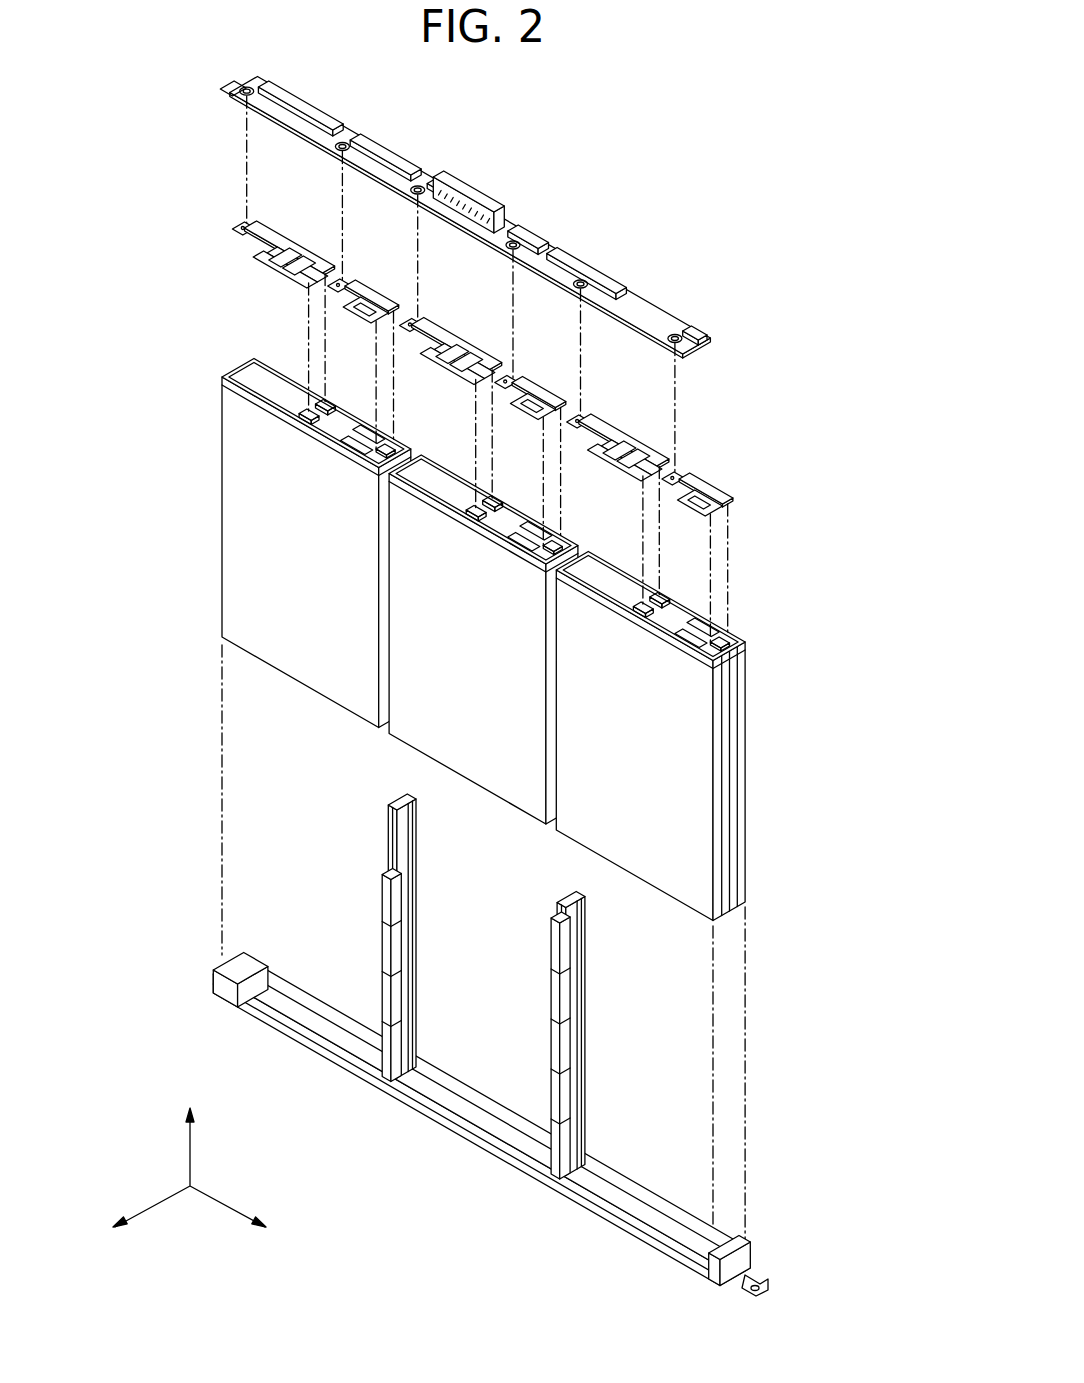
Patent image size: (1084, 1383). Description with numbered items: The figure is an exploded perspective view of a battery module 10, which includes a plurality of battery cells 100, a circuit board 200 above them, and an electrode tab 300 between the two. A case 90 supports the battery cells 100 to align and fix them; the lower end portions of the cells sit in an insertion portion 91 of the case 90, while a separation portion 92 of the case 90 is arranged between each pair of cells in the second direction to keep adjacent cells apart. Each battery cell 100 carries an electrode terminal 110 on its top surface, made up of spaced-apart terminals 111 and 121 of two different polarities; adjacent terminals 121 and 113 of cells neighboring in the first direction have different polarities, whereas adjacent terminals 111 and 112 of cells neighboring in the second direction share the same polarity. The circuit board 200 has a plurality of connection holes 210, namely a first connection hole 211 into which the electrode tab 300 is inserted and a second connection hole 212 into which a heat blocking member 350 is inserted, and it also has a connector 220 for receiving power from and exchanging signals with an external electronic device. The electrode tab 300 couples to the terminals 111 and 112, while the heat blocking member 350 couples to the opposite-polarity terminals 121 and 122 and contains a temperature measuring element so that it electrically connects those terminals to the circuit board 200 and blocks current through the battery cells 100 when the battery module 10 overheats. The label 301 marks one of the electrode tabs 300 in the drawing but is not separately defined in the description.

The battery module 10 is at (771, 116).
The case 90 is at (766, 1154).
The insertion portion 91 is at (480, 1140).
The separation portion 92 is at (560, 1008).
The battery cells 100 is at (786, 657).
The electrode terminal 110 is at (545, 550).
The terminal 111 is at (720, 630).
The terminal 112 is at (698, 647).
The terminal 113 is at (554, 539).
The terminal 121 is at (659, 597).
The terminal 122 is at (640, 614).
The circuit board 200 is at (705, 314).
The connection hole 210 is at (531, 279).
The first connection hole 211 is at (686, 344).
The second connection hole 212 is at (584, 280).
The connector 220 is at (466, 190).
The electrode tab 300 is at (522, 433).
The first bus bar 301 is at (722, 490).
The heat blocking member 350 is at (650, 448).